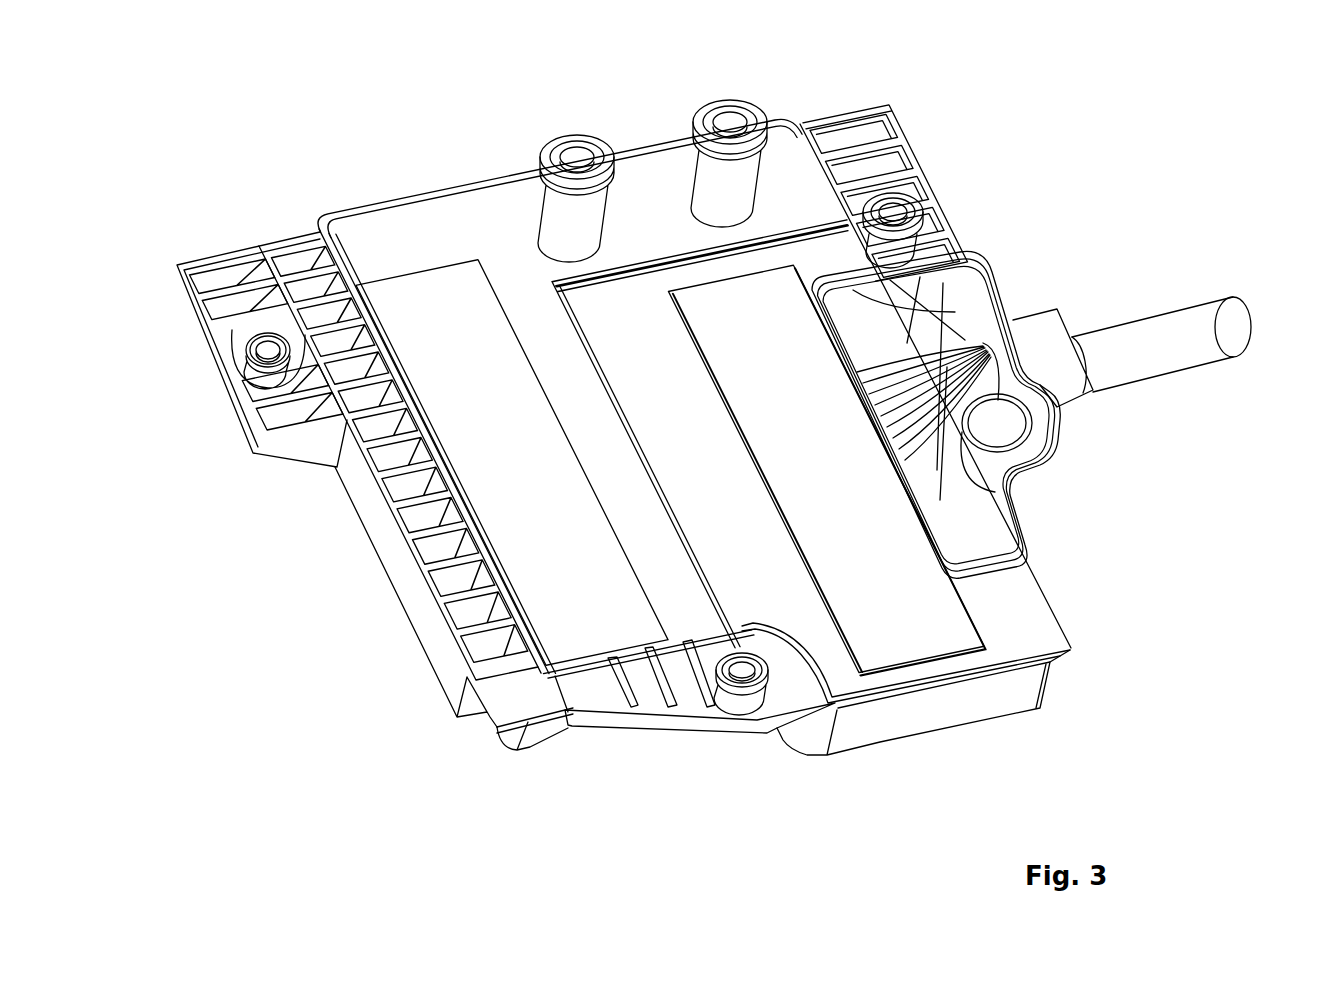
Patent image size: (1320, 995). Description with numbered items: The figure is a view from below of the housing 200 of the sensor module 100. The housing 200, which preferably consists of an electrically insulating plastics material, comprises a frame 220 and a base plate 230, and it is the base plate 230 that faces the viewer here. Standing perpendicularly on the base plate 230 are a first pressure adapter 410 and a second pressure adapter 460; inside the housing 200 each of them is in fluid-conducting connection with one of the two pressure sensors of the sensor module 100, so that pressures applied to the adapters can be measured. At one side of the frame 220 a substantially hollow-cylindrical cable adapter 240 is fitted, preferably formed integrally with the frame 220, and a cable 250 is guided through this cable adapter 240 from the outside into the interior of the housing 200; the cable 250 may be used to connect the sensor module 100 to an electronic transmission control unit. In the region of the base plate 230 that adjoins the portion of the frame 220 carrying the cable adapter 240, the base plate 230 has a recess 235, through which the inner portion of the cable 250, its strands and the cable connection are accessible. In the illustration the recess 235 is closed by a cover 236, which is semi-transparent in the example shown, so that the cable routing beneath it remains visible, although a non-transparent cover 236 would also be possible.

The sensor module 100 is at (386, 54).
The housing 200 is at (736, 429).
The frame 220 is at (903, 723).
The base plate 230 is at (917, 637).
The recess 235 is at (980, 262).
The cover 236 is at (965, 533).
The cable adapter 240 is at (1067, 343).
The cable 250 is at (1225, 293).
The first pressure adapter 410 is at (575, 158).
The second pressure adapter 460 is at (735, 125).